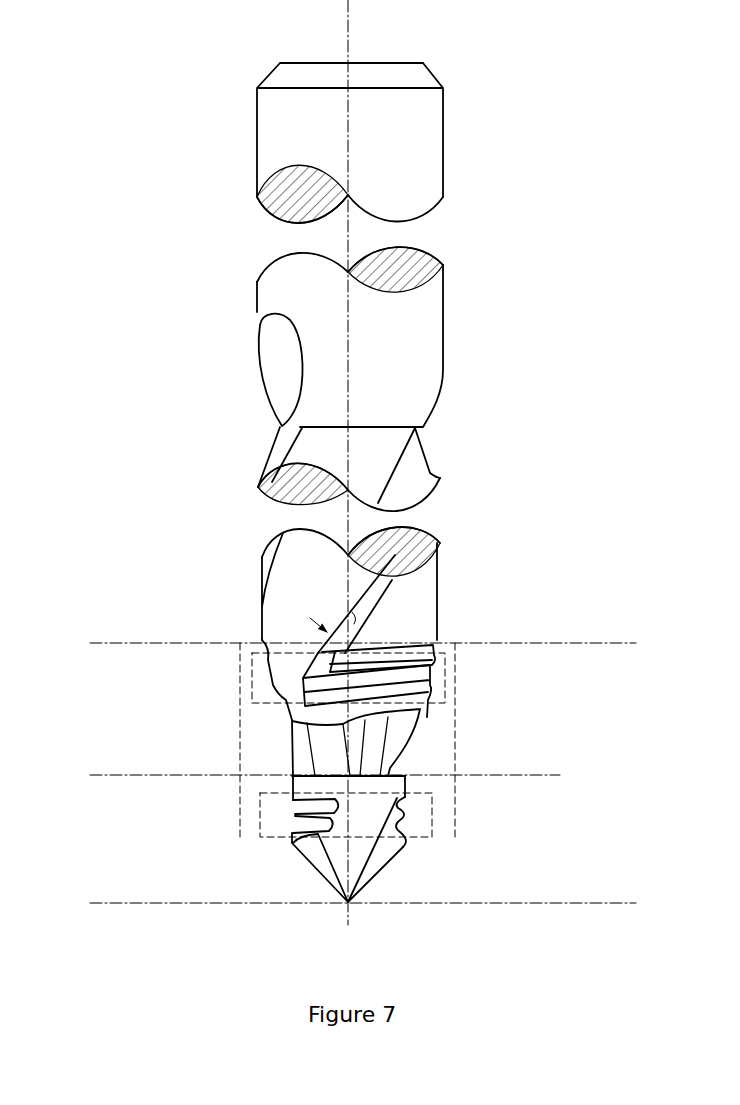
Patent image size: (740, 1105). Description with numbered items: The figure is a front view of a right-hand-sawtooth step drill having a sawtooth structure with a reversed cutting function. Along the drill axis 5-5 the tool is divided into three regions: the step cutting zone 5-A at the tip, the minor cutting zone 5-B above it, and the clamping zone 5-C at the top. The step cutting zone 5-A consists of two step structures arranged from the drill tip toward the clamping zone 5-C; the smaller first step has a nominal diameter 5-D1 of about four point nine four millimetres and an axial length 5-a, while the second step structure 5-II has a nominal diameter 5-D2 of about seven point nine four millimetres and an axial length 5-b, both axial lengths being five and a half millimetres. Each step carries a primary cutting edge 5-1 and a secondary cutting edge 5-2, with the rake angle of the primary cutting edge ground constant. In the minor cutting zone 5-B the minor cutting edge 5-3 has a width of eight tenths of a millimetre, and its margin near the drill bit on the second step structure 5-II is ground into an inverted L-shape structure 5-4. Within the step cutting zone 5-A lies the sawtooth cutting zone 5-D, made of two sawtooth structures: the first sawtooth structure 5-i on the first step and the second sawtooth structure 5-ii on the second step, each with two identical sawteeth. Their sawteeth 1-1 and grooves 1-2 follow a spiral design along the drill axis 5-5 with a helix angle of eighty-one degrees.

The drill axis 5-5 is at (348, 397).
The minor cutting edge 5-3 is at (370, 580).
The inverted L-shape structure 5-4 is at (270, 668).
The nominal diameter of the second step structure 5-D2 is at (470, 587).
The grooves 1-2 is at (328, 662).
The sawteeth 1-1 is at (300, 705).
The secondary cutting edge 5-2 is at (289, 744).
The primary cutting edge 5-1 is at (322, 875).
The sawtooth cutting zone 5-D is at (455, 740).
The second sawtooth structure 5-ii is at (446, 674).
The first sawtooth structure 5-i is at (432, 816).
The second step structure 5-II is at (557, 643).
The step cutting zone 5-A is at (613, 643).
The minor cutting zone 5-B is at (257, 313).
The clamping zone 5-C is at (423, 63).
The axial length of the first step structure 5-a is at (108, 775).
The axial length of the second step structure 5-b is at (108, 643).
The nominal diameter of the first step structure 5-D1 is at (292, 845).